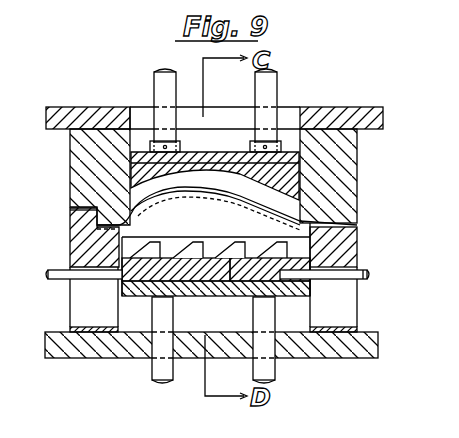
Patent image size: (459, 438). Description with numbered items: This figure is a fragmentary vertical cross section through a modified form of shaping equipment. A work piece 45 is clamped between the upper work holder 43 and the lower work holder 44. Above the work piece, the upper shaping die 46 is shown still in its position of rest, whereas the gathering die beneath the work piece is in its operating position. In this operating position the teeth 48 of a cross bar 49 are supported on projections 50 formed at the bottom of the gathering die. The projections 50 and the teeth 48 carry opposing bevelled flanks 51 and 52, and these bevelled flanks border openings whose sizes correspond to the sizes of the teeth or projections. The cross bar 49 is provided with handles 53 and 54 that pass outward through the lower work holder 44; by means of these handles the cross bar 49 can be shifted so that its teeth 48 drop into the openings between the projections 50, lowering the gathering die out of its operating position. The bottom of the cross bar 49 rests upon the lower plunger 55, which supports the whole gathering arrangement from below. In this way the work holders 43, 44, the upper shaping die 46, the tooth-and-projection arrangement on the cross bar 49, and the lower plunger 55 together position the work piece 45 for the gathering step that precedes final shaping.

The upper work holder 43 is at (96, 165).
The lower work holder 44 is at (88, 239).
The work piece 45 is at (143, 203).
The upper shaping die 46 is at (273, 197).
The teeth 48 is at (232, 265).
The cross bar 49 is at (120, 282).
The projections 50 is at (217, 247).
The bevelled flank 51 is at (185, 246).
The bevelled flank 52 is at (190, 262).
The handle 53 is at (47, 274).
The handle 54 is at (373, 274).
The lower plunger 55 is at (291, 292).